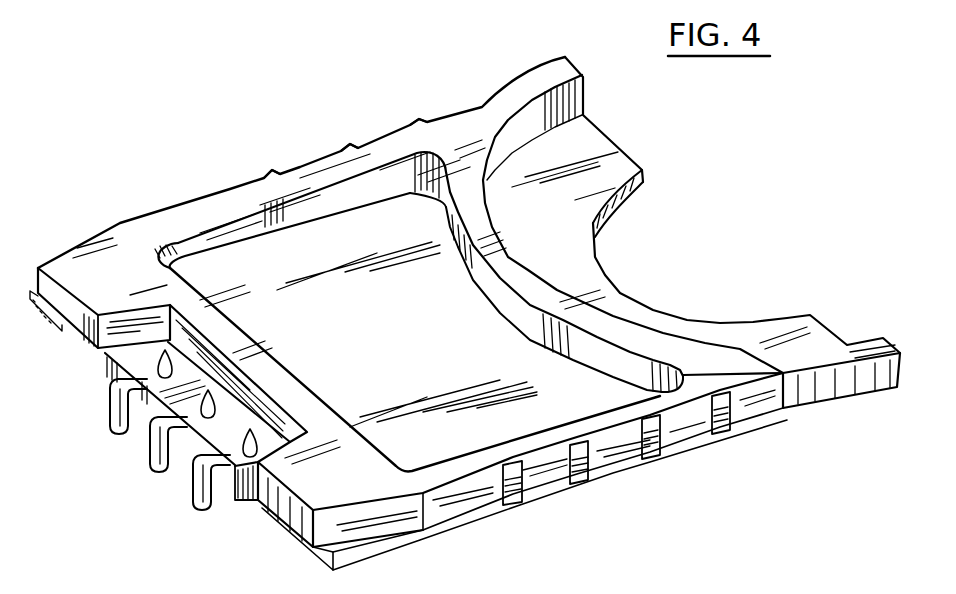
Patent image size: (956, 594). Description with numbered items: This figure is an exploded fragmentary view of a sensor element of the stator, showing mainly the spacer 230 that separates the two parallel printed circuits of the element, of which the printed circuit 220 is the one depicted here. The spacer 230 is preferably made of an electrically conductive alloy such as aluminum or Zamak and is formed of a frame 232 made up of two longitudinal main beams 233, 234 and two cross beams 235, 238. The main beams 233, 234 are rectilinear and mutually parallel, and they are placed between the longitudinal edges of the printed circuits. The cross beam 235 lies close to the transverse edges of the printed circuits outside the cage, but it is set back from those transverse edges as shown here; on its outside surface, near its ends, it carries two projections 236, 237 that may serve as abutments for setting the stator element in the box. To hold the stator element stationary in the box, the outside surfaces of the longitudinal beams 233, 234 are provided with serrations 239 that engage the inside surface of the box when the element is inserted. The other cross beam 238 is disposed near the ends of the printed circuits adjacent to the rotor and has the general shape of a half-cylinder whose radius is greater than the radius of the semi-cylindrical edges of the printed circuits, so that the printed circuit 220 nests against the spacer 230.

The printed circuit 220 is at (597, 170).
The spacer 230 is at (298, 158).
The frame 232 is at (387, 147).
The longitudinal main beam 233 is at (188, 204).
The longitudinal main beam 234 is at (513, 506).
The cross beam 235 is at (200, 477).
The projection 236 is at (290, 503).
The projection 237 is at (70, 312).
The cross beam 238 is at (620, 333).
The serrations 239 is at (273, 172).